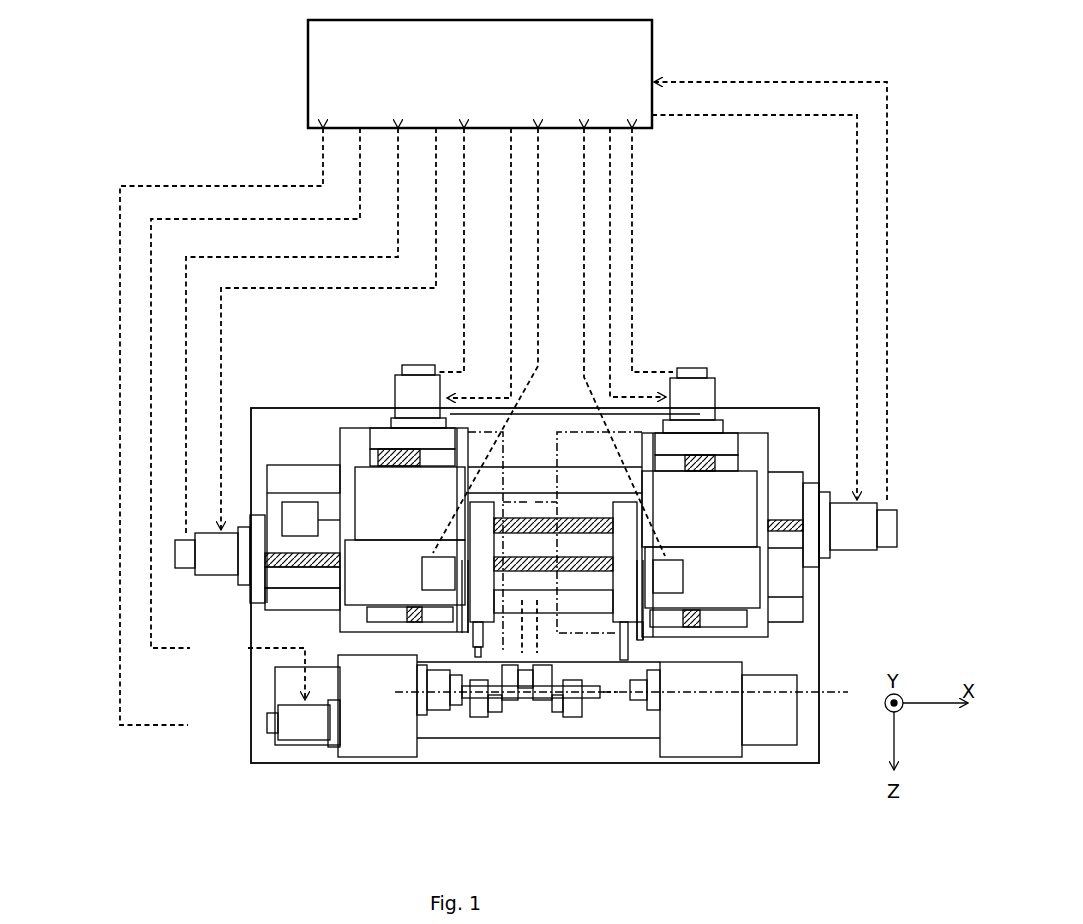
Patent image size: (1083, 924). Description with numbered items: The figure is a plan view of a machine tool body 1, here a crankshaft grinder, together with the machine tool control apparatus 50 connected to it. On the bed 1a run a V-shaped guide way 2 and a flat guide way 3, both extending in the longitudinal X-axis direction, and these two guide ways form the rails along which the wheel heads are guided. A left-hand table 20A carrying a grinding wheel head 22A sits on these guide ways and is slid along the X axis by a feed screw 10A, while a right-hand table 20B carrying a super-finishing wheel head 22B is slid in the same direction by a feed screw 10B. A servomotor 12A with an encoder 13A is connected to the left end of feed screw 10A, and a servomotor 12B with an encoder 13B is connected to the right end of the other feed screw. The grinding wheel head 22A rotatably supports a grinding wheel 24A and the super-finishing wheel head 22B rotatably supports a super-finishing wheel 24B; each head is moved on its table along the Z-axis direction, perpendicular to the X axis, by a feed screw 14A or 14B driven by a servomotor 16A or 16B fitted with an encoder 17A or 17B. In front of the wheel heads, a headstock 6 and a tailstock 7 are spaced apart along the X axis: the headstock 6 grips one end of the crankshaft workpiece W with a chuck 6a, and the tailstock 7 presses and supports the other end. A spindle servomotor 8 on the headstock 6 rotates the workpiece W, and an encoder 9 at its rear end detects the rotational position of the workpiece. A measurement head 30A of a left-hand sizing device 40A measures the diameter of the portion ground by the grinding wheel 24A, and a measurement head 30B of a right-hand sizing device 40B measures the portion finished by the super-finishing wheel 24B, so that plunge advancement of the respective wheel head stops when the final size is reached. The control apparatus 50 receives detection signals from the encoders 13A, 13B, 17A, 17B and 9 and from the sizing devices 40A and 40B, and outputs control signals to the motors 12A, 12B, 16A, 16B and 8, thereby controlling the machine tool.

The machine tool body 1 is at (752, 315).
The bed 1a is at (262, 678).
The V-shaped guide way 2 is at (277, 603).
The flat guide way 3 is at (272, 473).
The headstock 6 is at (358, 738).
The chuck 6a is at (435, 697).
The tailstock 7 is at (722, 727).
The spindle servomotor 8 is at (292, 732).
The encoder 9 is at (267, 725).
The feed screw 10A is at (276, 552).
The feed screw 10B is at (787, 512).
The servomotor 12A is at (210, 551).
The servomotor 12B is at (853, 518).
The encoder 13A is at (176, 563).
The encoder 13B is at (890, 523).
The feed screw 14A is at (400, 463).
The feed screw 14B is at (748, 465).
The servomotor 16A is at (418, 395).
The servomotor 16B is at (698, 393).
The encoder 17A is at (416, 364).
The encoder 17B is at (692, 366).
The left-hand table 20A is at (357, 442).
The right-hand table 20B is at (752, 444).
The grinding wheel head 22A is at (380, 505).
The super-finishing wheel head 22B is at (663, 511).
The grinding wheel 24A is at (478, 650).
The super-finishing wheel 24B is at (628, 657).
The measurement head 30A is at (460, 678).
The measurement head 30B is at (627, 700).
The left-hand sizing device 40A is at (427, 585).
The right-hand sizing device 40B is at (675, 584).
The machine tool control apparatus 50 is at (653, 45).
The workpiece W is at (480, 726).